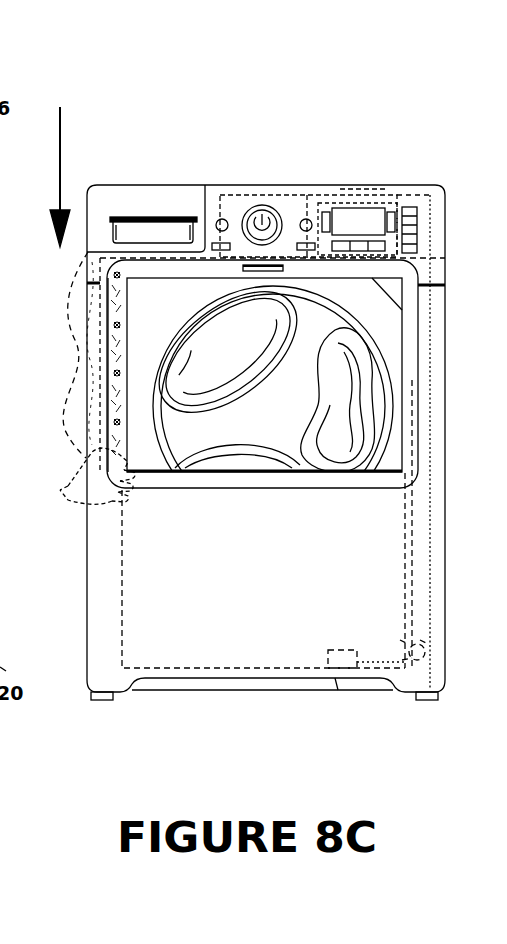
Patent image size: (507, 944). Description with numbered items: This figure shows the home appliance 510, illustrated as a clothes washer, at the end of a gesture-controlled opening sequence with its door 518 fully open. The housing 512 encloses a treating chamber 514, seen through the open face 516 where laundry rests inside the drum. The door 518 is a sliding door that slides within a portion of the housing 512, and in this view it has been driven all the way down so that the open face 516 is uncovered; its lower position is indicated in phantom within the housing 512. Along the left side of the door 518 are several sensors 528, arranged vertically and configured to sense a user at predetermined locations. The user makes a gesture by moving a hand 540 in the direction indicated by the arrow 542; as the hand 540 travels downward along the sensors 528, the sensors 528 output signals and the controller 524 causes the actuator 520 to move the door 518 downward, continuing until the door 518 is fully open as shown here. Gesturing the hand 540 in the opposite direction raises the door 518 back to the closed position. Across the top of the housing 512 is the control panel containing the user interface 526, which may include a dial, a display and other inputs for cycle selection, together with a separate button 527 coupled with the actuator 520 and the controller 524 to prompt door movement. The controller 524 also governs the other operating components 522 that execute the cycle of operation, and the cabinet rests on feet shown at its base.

The home appliance 510 is at (123, 146).
The housing 512 is at (285, 185).
The treating chamber 514 is at (323, 333).
The open face 516 is at (150, 283).
The lower compartment (dashed) 518 is at (122, 577).
The actuator 520 is at (450, 672).
The components 522 is at (330, 700).
The controller 524 is at (379, 185).
The user interface 526 is at (396, 208).
The button 527 is at (221, 218).
The sensors 528 is at (117, 278).
The hand 540 is at (72, 494).
The arrow 542 is at (61, 130).